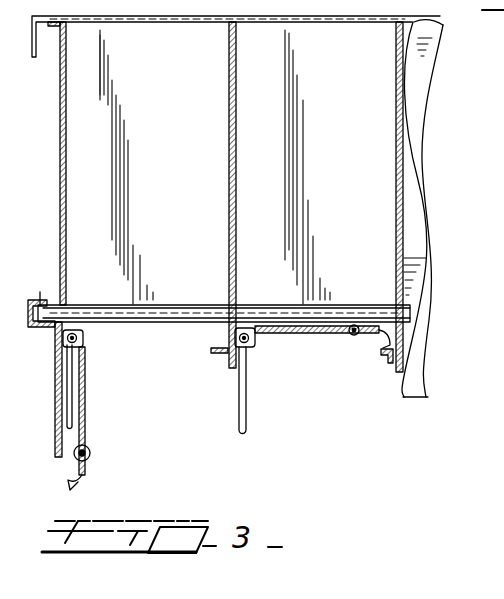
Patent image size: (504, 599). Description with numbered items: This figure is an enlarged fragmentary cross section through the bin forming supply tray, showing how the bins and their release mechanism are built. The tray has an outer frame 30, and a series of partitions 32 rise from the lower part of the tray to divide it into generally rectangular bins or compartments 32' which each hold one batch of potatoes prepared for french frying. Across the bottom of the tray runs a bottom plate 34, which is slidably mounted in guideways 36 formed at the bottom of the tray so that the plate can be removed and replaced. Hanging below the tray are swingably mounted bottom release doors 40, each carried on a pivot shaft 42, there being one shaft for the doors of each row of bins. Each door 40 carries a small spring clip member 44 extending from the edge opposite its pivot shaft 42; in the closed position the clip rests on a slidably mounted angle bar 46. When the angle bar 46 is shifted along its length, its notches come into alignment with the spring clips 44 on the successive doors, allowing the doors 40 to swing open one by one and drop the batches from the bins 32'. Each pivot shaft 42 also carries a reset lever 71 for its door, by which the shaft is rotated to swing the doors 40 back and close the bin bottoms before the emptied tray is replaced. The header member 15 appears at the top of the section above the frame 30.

The top header rail 15 is at (186, 2).
The outer frame 30 is at (62, 135).
The partition 32 is at (316, 197).
The bin 32' is at (59, 71).
The bottom plate 34 is at (183, 316).
The guideway 36 is at (50, 300).
The bottom release door 40 is at (85, 430).
The pivot shaft 42 is at (72, 335).
The spring clip member 44 is at (80, 478).
The angle bar 46 is at (226, 356).
The reset lever 71 is at (72, 377).